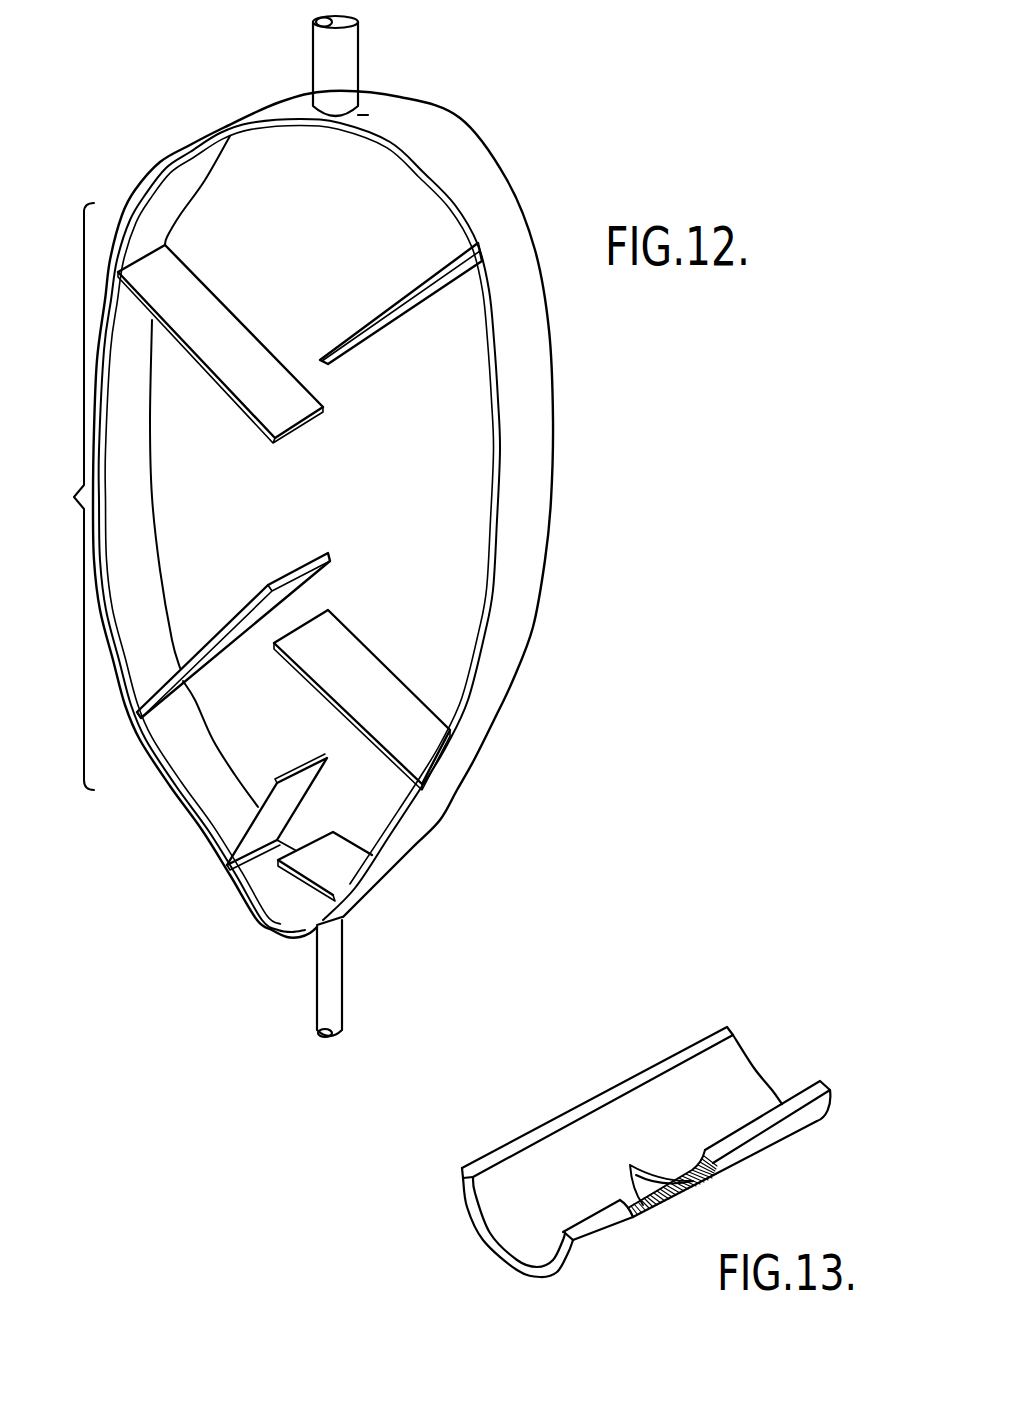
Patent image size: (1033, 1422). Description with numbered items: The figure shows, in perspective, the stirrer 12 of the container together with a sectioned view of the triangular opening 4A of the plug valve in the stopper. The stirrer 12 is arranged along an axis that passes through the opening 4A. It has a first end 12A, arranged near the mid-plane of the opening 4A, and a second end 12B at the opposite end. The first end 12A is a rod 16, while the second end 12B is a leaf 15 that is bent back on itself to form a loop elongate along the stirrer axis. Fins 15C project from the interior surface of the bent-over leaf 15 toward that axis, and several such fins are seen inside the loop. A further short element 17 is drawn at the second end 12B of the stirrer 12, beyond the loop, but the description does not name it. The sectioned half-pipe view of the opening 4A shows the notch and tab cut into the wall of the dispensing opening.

In FIG. 12, the stirrer 12 is at (63, 496).
In FIG. 12, the first end 12A is at (343, 925).
In FIG. 12, the second end 12B is at (368, 115).
In FIG. 12, the leaf 15 is at (527, 458).
In FIG. 12, the internal baffle fins 15C is at (293, 580).
In FIG. 12, the rod 16 is at (323, 985).
In FIG. 12, the upper tube 17 is at (338, 42).
In FIG. 13, the triangular opening 4A is at (637, 1183).